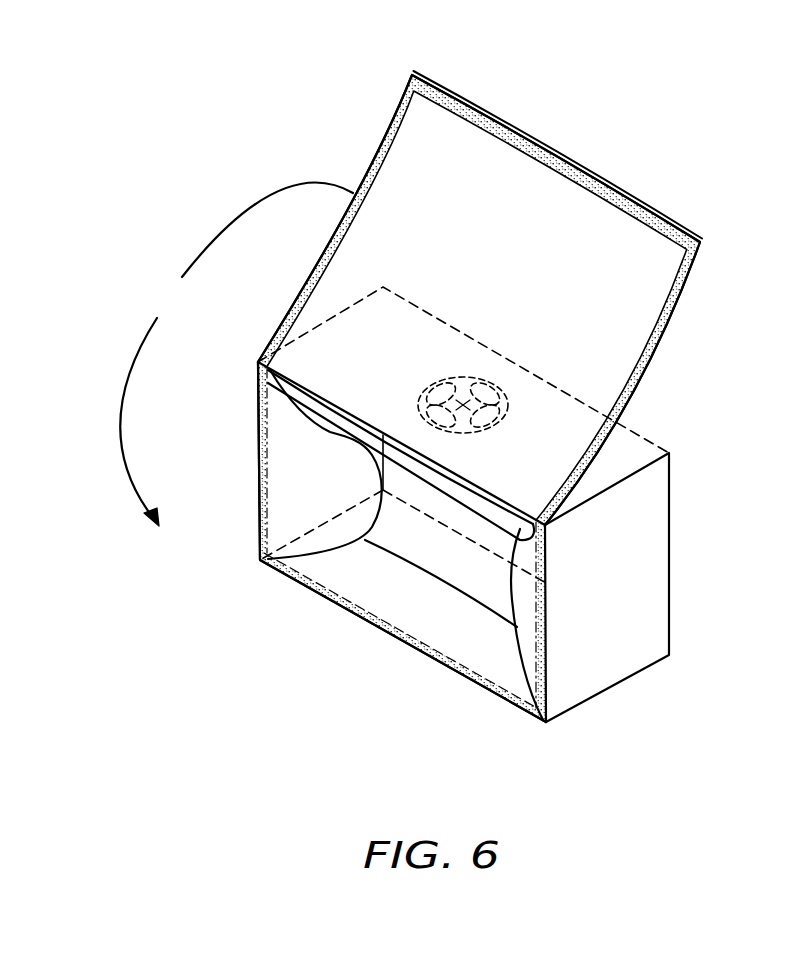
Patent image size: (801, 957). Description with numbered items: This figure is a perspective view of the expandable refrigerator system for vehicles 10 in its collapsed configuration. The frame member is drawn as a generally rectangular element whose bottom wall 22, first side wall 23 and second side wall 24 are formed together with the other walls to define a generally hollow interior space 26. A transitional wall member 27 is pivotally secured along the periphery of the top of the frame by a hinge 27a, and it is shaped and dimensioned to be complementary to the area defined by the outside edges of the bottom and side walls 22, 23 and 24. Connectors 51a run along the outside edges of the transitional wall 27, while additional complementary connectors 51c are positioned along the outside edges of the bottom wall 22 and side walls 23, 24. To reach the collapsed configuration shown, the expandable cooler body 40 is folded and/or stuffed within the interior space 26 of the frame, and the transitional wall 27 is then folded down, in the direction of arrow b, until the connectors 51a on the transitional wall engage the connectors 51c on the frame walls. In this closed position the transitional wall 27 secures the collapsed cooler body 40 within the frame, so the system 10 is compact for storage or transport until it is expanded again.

The expandable refrigerator system for vehicles 10 is at (167, 215).
The bottom wall 22 is at (442, 613).
The first side wall 23 is at (330, 485).
The second side wall 24 is at (622, 614).
The hollow interior space 26 is at (330, 407).
The transitional wall member 27 is at (532, 267).
The hinge 27a is at (519, 514).
The expandable cooler body 40 is at (481, 624).
The connectors 51a is at (380, 157).
The complementary connectors 51c is at (262, 548).
The arrow b is at (236, 355).